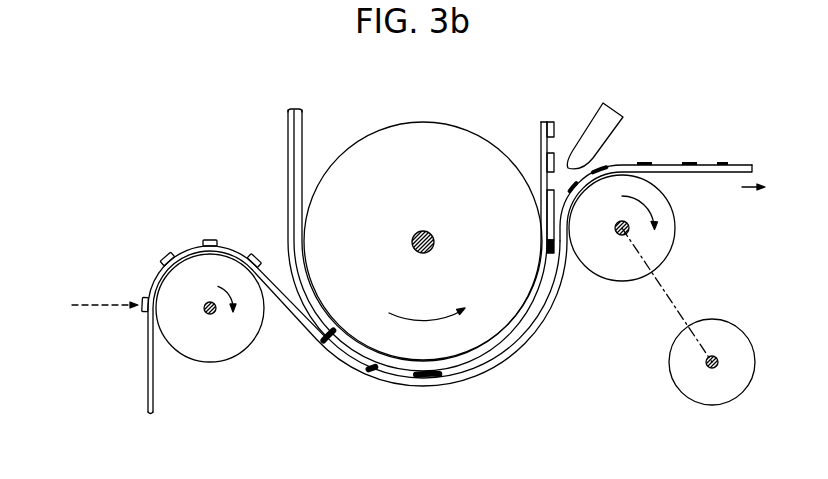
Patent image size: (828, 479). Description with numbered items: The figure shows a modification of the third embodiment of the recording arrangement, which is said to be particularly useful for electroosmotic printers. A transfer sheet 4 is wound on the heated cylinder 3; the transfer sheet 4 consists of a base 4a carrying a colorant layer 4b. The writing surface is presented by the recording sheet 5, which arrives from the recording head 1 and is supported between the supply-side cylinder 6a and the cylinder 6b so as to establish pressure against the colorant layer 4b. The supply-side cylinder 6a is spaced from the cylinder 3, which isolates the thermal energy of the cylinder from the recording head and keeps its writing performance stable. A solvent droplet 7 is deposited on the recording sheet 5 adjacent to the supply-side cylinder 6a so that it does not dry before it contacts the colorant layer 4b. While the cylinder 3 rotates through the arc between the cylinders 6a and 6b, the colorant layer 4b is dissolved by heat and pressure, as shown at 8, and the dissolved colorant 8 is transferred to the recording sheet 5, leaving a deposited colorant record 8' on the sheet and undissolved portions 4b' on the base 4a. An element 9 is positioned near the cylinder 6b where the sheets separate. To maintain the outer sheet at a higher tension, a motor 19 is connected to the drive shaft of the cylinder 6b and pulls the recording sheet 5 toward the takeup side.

The print head (from head) 1 is at (98, 256).
The cylinder 3 is at (419, 128).
The transfer sheet 4 is at (287, 107).
The base 4a is at (302, 130).
The colorant layer 4b is at (401, 243).
The undissolved portions 4b' is at (542, 162).
The recording sheet 5 is at (146, 396).
The supply-side cylinder 6a is at (220, 363).
The cylinder 6b is at (621, 282).
The solvent droplet 7 is at (252, 253).
The dissolved colorant 8 is at (405, 388).
The deposited colorant 8' is at (649, 147).
The cleaning blade 9 is at (613, 106).
The motor 19 is at (730, 321).